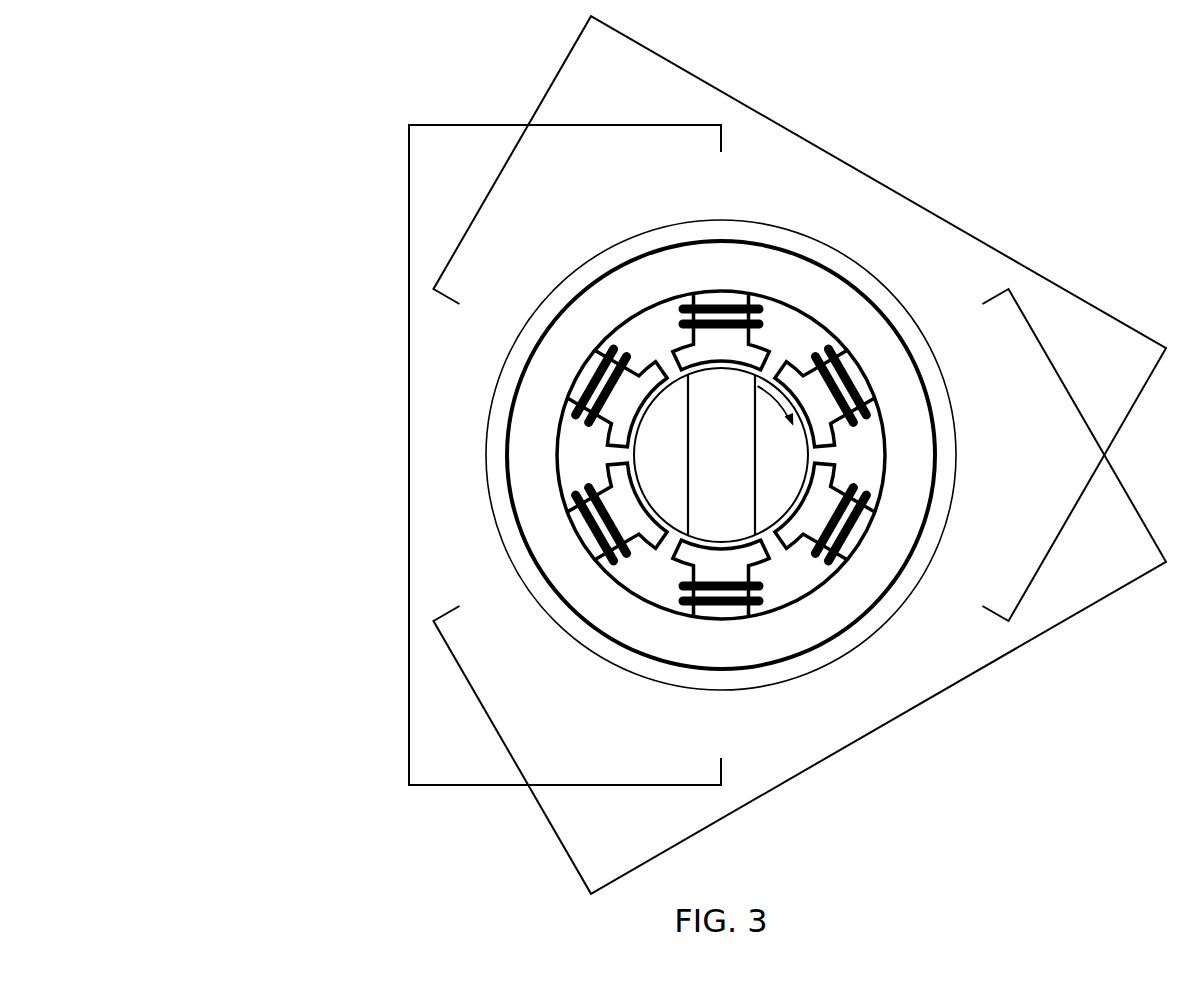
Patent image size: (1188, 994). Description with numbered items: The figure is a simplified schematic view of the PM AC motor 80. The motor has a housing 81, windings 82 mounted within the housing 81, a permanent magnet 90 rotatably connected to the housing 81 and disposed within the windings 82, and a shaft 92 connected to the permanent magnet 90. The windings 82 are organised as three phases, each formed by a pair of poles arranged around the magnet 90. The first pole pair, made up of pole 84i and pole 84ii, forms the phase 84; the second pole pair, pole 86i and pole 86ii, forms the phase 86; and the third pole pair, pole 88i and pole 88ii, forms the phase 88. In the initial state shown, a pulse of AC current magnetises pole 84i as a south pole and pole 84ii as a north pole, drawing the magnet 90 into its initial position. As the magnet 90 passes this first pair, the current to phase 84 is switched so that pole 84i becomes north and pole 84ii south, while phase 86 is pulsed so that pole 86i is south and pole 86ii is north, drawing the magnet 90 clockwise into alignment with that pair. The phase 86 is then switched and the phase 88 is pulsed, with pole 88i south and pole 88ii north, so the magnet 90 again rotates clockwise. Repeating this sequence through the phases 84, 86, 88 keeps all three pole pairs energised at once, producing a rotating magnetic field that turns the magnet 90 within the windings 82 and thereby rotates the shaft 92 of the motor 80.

The PM AC motor 80 is at (233, 108).
The housing 81 is at (582, 263).
The windings 82 is at (778, 322).
The phase 84 is at (409, 407).
The pole 84i is at (710, 305).
The pole 84ii is at (720, 612).
The phase 86 is at (920, 705).
The pole 86i is at (853, 380).
The pole 86ii is at (583, 530).
The phase 88 is at (900, 193).
The pole 88i is at (866, 545).
The pole 88ii is at (590, 373).
The permanent magnet 90 is at (721, 454).
The shaft 92 is at (657, 458).